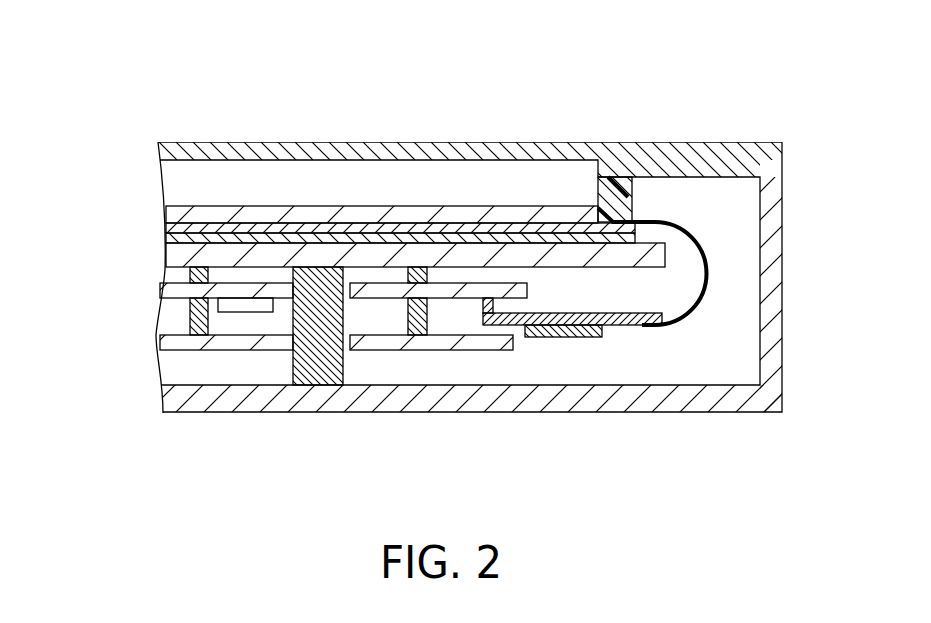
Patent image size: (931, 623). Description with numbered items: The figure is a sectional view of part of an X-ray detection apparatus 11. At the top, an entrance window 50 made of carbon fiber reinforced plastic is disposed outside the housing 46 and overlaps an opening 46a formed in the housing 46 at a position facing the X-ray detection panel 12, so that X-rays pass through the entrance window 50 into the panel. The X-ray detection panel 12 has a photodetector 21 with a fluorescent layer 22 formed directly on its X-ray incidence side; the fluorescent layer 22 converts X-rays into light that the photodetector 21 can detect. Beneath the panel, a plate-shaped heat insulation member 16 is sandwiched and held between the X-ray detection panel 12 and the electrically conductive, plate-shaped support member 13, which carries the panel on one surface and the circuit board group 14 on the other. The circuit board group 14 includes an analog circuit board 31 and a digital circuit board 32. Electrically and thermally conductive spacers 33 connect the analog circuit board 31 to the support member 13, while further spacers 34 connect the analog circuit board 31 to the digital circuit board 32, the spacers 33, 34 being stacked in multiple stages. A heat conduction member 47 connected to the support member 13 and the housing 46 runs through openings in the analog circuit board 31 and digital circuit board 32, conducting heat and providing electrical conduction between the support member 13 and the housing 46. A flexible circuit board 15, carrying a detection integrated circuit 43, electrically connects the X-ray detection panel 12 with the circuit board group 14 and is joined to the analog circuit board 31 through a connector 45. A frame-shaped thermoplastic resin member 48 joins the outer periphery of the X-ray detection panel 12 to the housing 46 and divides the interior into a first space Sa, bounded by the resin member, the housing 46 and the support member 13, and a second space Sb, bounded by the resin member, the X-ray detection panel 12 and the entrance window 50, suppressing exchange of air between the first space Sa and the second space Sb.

The X-ray detection apparatus 11 is at (433, 240).
The X-ray detection panel 12 is at (400, 146).
The support member 13 is at (518, 253).
The circuit board group 14 is at (280, 315).
The flexible circuit board 15 is at (677, 327).
The heat insulation member 16 is at (163, 243).
The photodetector 21 is at (290, 228).
The fluorescent layer 22 is at (347, 216).
The analog circuit board 31 is at (172, 290).
The digital circuit board 32 is at (172, 345).
The spacers 33 is at (180, 275).
The spacers 34 is at (200, 330).
The detection integrated circuit 43 is at (565, 330).
The connector 45 is at (495, 305).
The housing 46 is at (770, 283).
The opening 46a is at (596, 167).
The heat conduction member 47 is at (303, 315).
The thermoplastic resin member 48 is at (627, 199).
The entrance window 50 is at (489, 254).
The first space Sa is at (735, 312).
The second space Sb is at (228, 183).